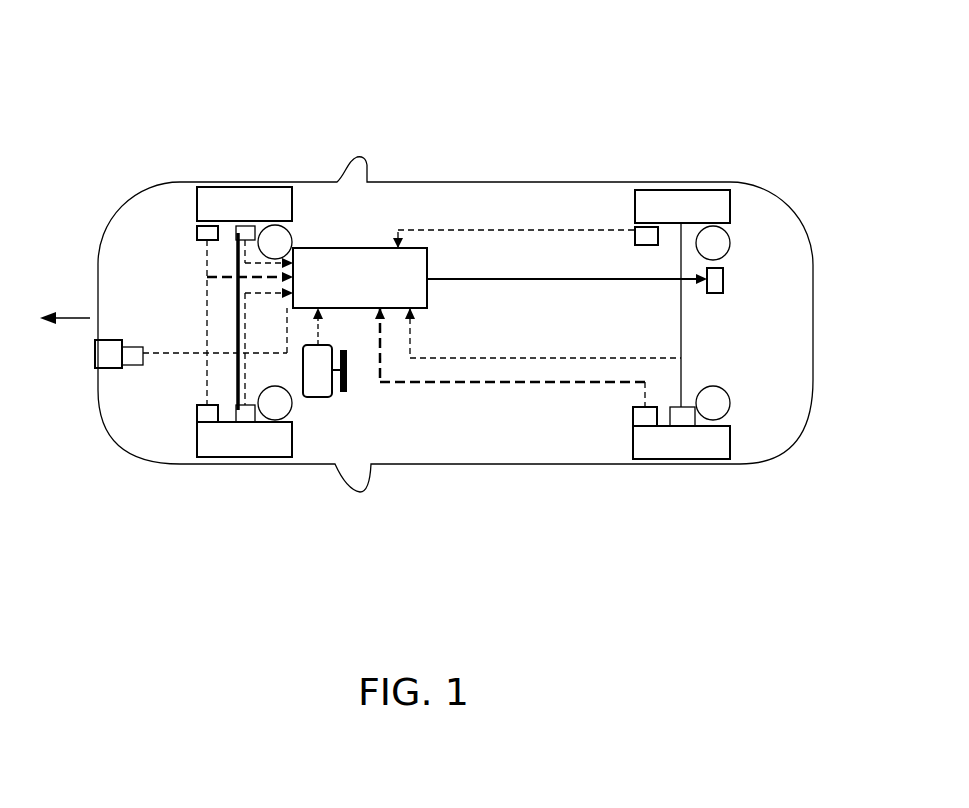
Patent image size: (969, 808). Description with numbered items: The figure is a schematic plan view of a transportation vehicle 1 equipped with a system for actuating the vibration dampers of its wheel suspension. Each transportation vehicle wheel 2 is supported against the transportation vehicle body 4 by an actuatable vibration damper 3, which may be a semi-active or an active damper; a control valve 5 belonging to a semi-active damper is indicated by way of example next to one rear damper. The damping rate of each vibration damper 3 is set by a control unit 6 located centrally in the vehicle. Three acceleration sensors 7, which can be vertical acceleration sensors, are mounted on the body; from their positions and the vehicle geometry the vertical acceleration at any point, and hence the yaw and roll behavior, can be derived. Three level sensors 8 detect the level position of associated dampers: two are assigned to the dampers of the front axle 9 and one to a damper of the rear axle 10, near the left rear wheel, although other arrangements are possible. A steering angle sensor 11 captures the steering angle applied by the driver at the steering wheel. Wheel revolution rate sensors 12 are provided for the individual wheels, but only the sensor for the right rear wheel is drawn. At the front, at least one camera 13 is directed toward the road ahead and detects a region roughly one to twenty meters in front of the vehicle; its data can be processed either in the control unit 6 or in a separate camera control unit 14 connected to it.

The transportation vehicle 1 is at (200, 95).
The transportation vehicle wheel 2 is at (275, 190).
The actuatable vibration damper 3 is at (291, 236).
The transportation vehicle body 4 is at (453, 182).
The control valve 5 is at (724, 280).
The control unit 6 is at (368, 250).
The acceleration sensor 7 is at (207, 232).
The level sensor 8 is at (245, 232).
The front axle 9 is at (240, 315).
The rear axle 10 is at (681, 315).
The steering angle sensor 11 is at (322, 395).
The wheel revolution rate sensor 12 is at (648, 230).
The camera 13 is at (112, 360).
The camera control unit 14 is at (135, 367).